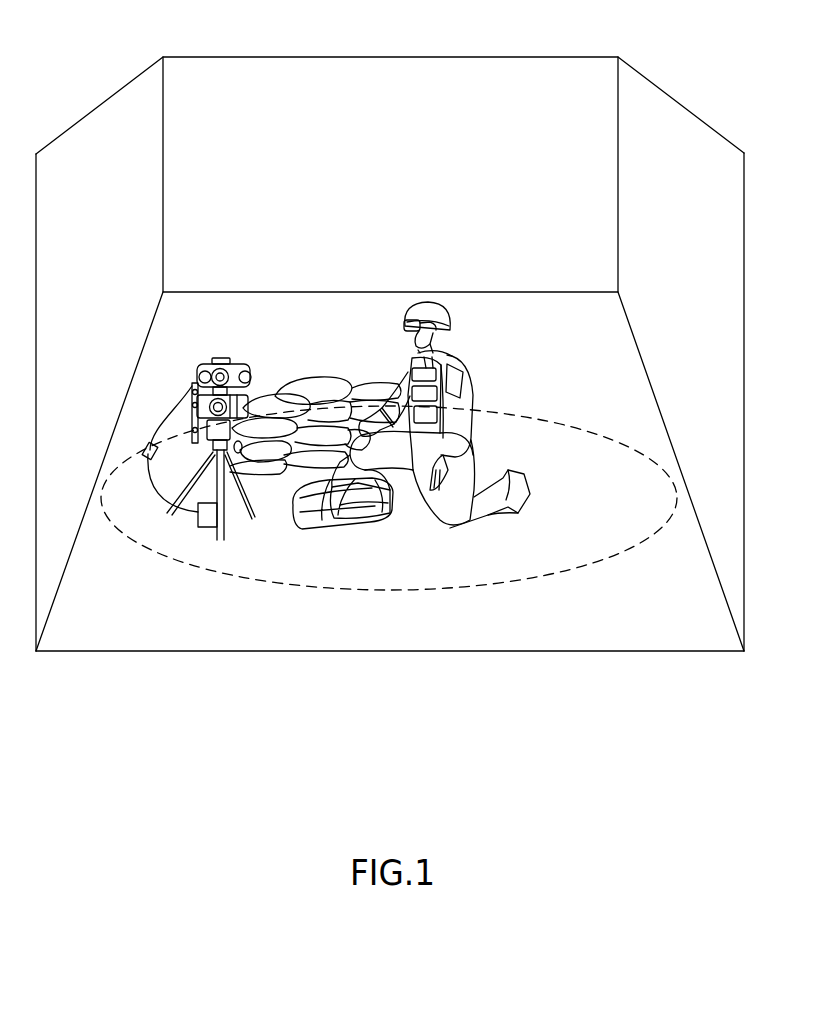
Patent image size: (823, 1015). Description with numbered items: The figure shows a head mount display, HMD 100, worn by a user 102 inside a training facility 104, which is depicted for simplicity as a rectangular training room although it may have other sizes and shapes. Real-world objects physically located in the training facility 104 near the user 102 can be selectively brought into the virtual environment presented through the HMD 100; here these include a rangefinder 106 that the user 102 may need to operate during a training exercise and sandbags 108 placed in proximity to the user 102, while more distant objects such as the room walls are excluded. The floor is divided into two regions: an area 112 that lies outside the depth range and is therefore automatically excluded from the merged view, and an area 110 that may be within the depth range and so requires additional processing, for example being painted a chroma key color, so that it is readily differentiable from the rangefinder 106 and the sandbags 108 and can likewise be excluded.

The HMD 100 is at (403, 322).
The user 102 is at (430, 415).
The training facility 104 is at (390, 348).
The rangefinder 106 is at (219, 355).
The sandbags 108 is at (308, 376).
The area of the floor 110 is at (359, 591).
The area of the floor 112 is at (216, 632).